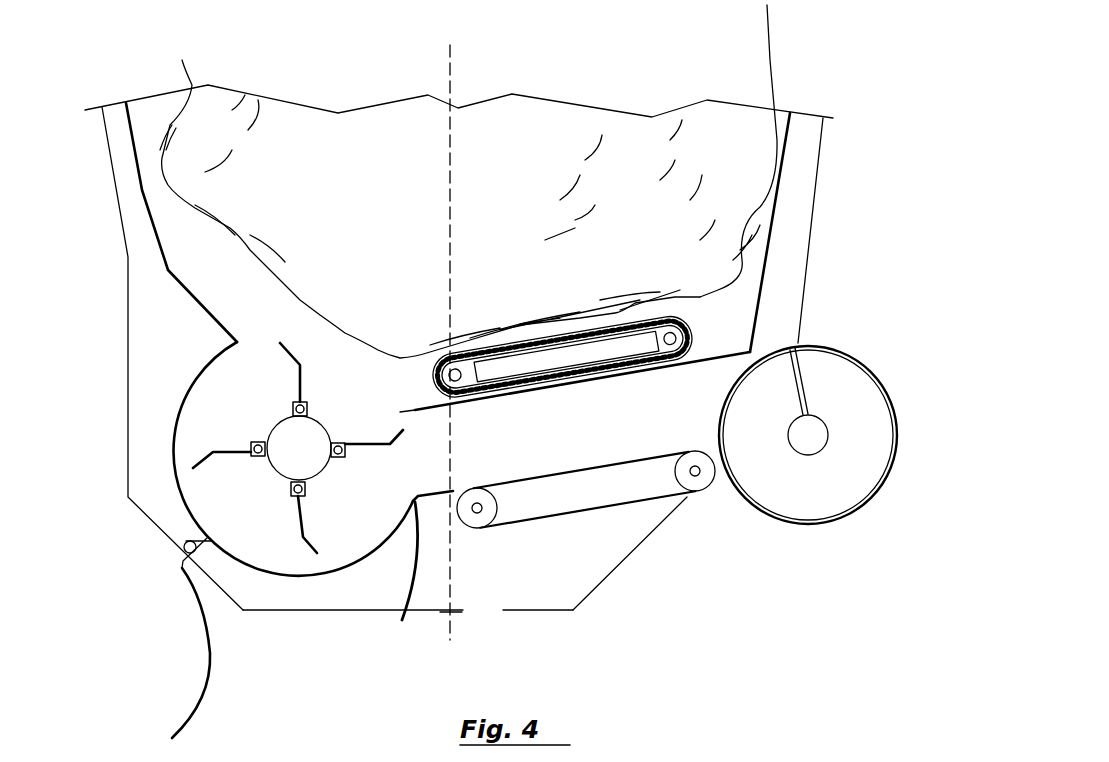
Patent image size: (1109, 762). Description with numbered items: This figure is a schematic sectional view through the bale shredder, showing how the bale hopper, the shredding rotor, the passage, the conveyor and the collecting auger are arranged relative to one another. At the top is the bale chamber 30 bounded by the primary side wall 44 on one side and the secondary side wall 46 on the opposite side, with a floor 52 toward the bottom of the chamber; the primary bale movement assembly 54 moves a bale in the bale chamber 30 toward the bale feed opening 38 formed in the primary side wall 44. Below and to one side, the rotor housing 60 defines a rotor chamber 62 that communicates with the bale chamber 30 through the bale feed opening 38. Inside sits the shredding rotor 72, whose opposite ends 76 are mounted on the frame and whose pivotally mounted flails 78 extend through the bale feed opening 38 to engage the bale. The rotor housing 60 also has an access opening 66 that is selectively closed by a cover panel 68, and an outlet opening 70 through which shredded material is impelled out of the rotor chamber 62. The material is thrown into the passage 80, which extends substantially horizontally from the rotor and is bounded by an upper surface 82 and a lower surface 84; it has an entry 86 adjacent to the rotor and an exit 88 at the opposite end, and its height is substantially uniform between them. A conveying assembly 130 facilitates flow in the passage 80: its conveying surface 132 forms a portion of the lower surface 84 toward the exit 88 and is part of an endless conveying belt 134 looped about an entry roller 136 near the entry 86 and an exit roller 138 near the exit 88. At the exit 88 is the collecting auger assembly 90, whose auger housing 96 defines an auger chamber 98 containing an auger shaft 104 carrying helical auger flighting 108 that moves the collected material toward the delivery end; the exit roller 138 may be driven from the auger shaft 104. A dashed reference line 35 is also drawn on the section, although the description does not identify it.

The bale chamber 30 is at (198, 233).
The centerline 35 is at (452, 640).
The bale feed opening 38 is at (237, 333).
The primary side wall 44 is at (118, 198).
The secondary side wall 46 is at (812, 216).
The floor 52 is at (700, 297).
The primary bale movement assembly 54 is at (645, 322).
The rotor housing 60 is at (320, 575).
The rotor chamber 62 is at (362, 507).
The access opening 66 is at (187, 503).
The cover panel 68 is at (208, 680).
The outlet opening 70 is at (401, 579).
The shredding rotor 72 is at (222, 423).
The opposite ends 76 is at (292, 462).
The flails 78 is at (292, 372).
The passage 80 is at (712, 385).
The upper surface 82 is at (533, 392).
The lower surface 84 is at (437, 493).
The entry 86 is at (402, 418).
The exit 88 is at (718, 437).
The collecting auger assembly 90 is at (860, 517).
The auger housing 96 is at (867, 361).
The auger chamber 98 is at (836, 456).
The auger shaft 104 is at (812, 437).
The auger flighting 108 is at (812, 493).
The conveying assembly 130 is at (610, 527).
The conveying surface 132 is at (603, 467).
The conveying belt 134 is at (508, 525).
The entry roller 136 is at (483, 523).
The exit roller 138 is at (700, 486).